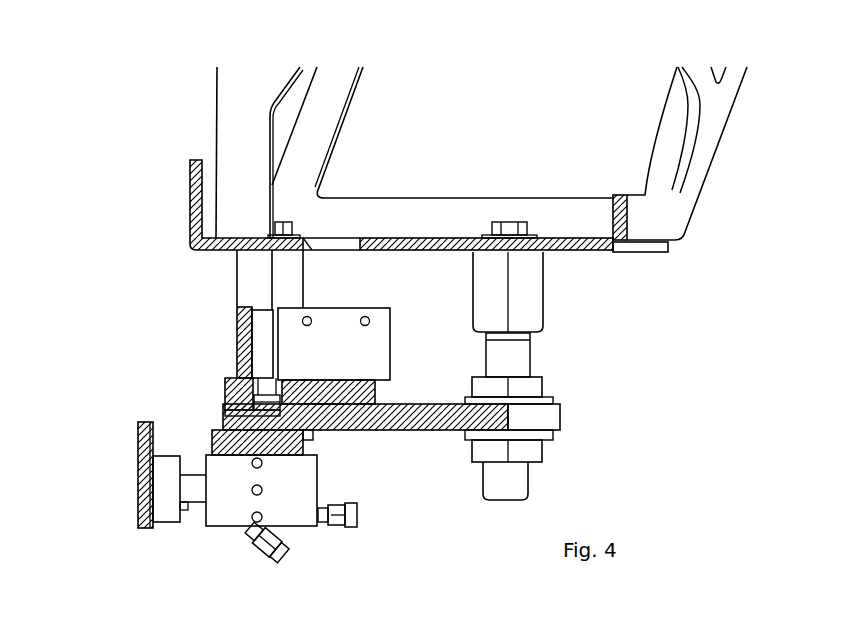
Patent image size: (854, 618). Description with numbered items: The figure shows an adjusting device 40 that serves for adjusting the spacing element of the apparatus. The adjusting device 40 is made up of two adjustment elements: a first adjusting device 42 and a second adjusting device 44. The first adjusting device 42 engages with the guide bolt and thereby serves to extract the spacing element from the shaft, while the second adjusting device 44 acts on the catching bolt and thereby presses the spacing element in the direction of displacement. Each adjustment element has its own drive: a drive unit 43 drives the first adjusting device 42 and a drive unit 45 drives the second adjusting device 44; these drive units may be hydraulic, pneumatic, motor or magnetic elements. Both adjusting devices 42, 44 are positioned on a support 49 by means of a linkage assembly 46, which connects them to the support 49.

The adjusting device 40 is at (158, 357).
The first adjusting device 42 is at (138, 480).
The drive unit 43 is at (292, 508).
The second adjusting device 44 is at (236, 347).
The drive unit 45 is at (357, 358).
The linkage assembly 46 is at (284, 272).
The support 49 is at (328, 92).